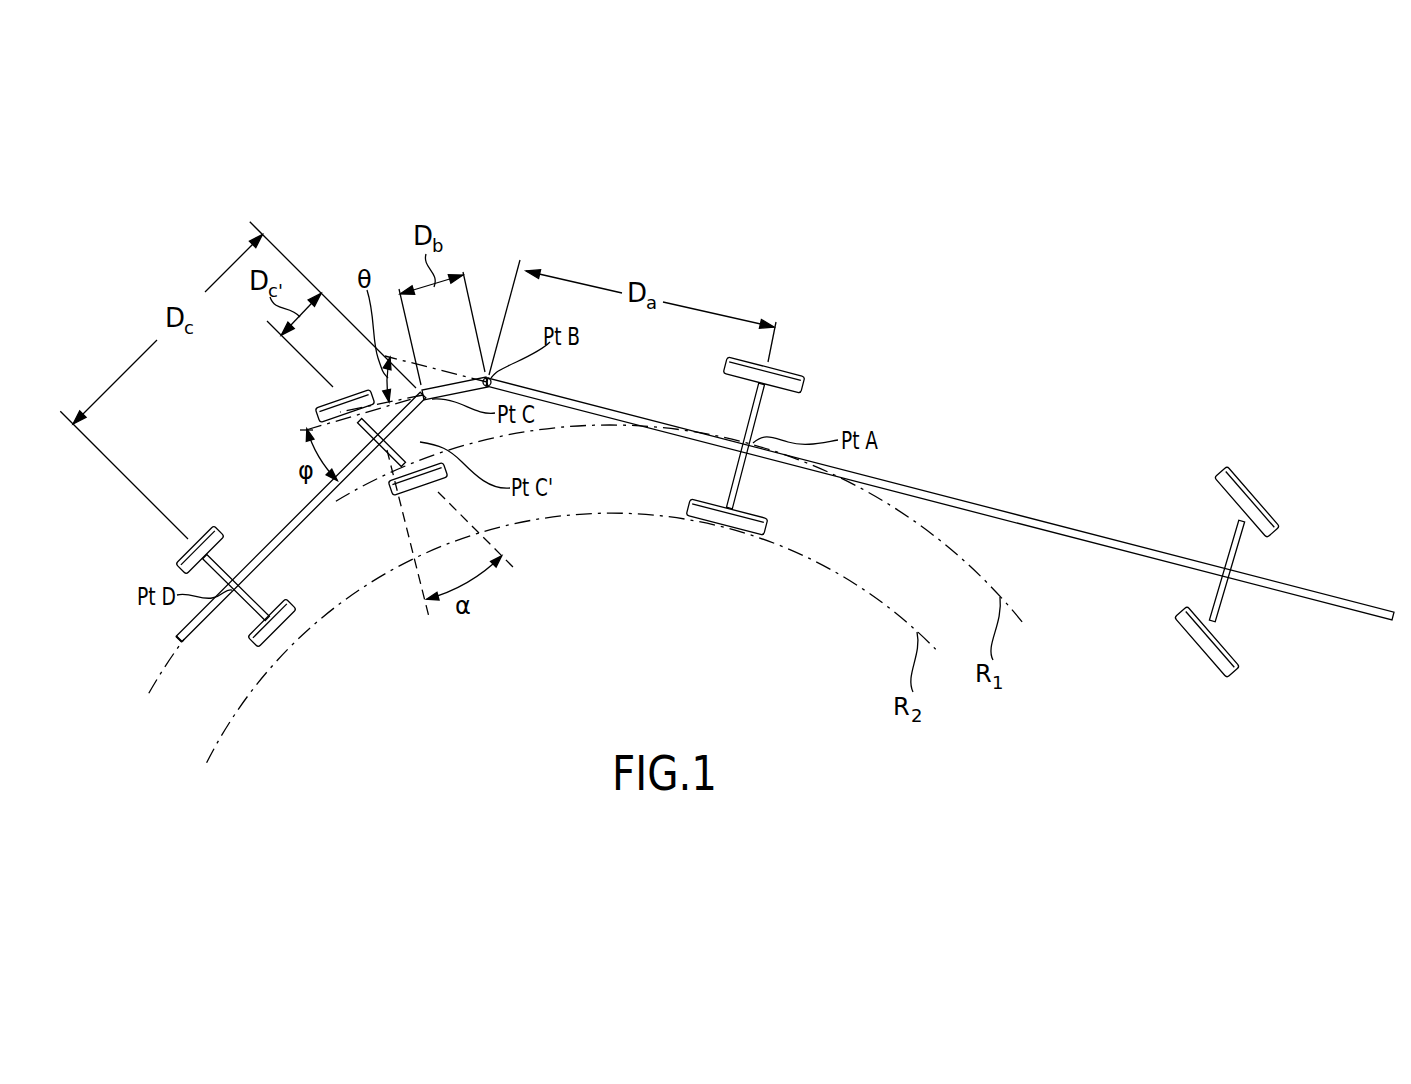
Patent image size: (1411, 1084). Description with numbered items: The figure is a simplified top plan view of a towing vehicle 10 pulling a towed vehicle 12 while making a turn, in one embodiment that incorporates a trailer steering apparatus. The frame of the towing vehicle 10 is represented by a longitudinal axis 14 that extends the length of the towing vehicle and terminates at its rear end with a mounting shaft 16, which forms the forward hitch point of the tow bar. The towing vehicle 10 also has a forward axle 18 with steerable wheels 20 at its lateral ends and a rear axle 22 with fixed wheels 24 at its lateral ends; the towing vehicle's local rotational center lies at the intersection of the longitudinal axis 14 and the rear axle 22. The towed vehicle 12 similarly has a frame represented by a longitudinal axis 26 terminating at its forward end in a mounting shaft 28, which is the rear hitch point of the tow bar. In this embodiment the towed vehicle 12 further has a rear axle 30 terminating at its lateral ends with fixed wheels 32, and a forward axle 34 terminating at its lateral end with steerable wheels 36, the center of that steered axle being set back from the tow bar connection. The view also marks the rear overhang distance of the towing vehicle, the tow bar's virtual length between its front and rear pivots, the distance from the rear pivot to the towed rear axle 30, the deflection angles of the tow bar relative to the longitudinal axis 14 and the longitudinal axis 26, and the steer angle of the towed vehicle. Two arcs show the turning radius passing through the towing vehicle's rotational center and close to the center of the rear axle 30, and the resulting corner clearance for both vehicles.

The towing vehicle 10 is at (940, 516).
The towed vehicle 12 is at (330, 557).
The longitudinal axis 14 is at (1069, 538).
The mounting shaft 16 is at (495, 377).
The forward axle 18 is at (1242, 552).
The steerable wheels 20 is at (1242, 474).
The rear axle 22 is at (763, 397).
The fixed wheels 24 is at (794, 372).
The longitudinal axis 26 is at (202, 626).
The mounting shaft 28 is at (515, 409).
The rear axle 30 is at (252, 601).
The fixed wheels 32 is at (190, 550).
The forward axle 34 is at (323, 428).
The steerable wheels 36 is at (433, 482).